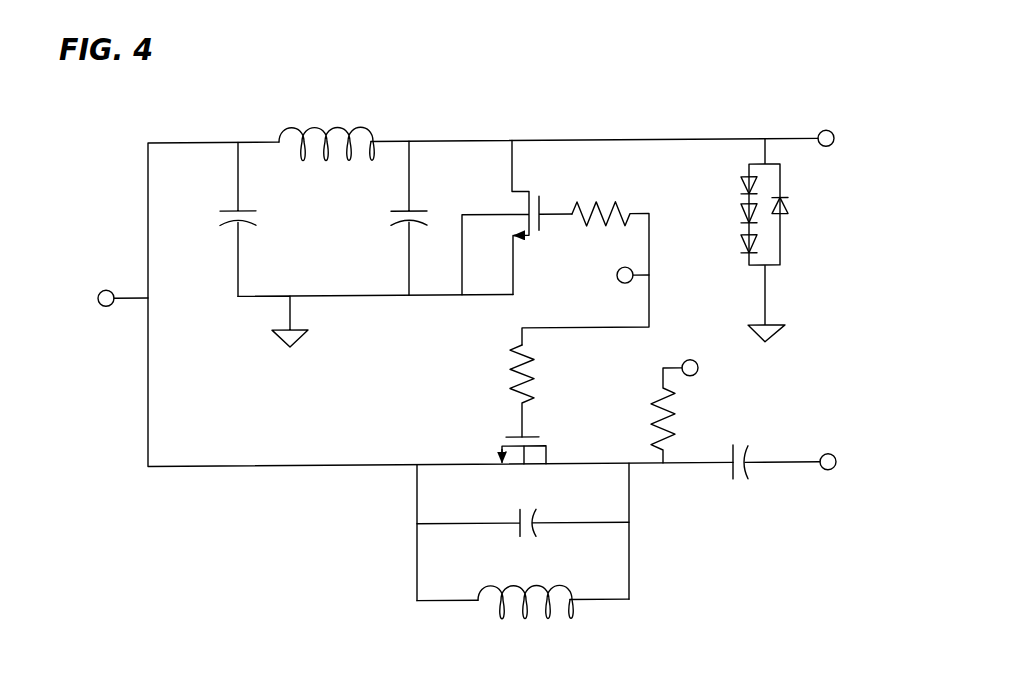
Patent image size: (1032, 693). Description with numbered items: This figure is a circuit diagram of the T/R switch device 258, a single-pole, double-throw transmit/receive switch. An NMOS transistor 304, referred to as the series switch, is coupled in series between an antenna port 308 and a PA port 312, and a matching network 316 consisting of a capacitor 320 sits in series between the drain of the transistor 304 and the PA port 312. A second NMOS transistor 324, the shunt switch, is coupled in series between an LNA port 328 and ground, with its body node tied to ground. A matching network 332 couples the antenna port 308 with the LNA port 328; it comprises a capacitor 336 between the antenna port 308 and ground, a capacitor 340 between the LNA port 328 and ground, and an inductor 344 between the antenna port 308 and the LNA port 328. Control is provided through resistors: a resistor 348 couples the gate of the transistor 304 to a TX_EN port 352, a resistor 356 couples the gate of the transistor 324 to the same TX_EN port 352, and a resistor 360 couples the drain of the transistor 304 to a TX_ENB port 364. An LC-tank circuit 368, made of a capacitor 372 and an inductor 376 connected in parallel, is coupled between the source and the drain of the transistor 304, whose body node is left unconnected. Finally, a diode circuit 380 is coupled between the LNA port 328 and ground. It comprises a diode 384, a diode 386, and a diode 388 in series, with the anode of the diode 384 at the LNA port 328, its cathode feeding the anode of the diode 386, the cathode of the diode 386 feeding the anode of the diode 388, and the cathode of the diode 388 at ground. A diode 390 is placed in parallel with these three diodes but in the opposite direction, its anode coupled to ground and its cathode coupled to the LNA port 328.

The T/R switch device 258 is at (486, 92).
The NMOS transistor 304 is at (538, 439).
The antenna port 308 is at (90, 319).
The PA port 312 is at (840, 435).
The matching network 316 is at (735, 504).
The capacitor 320 is at (731, 475).
The NMOS transistor 324 is at (528, 197).
The LNA port 328 is at (830, 110).
The matching network 332 is at (362, 215).
The capacitor 336 is at (247, 211).
The capacitor 340 is at (400, 212).
The inductor 344 is at (332, 130).
The resistor 348 is at (516, 374).
The TX_EN port 352 is at (612, 268).
The resistor 356 is at (623, 212).
The resistor 360 is at (672, 420).
The TX_ENB port 364 is at (665, 353).
The LC-tank circuit 368 is at (485, 555).
The capacitor 372 is at (517, 516).
The inductor 376 is at (558, 591).
The diode circuit 380 is at (768, 240).
The diode 384 is at (745, 187).
The diode 386 is at (745, 217).
The diode 388 is at (745, 248).
The diode 390 is at (790, 209).